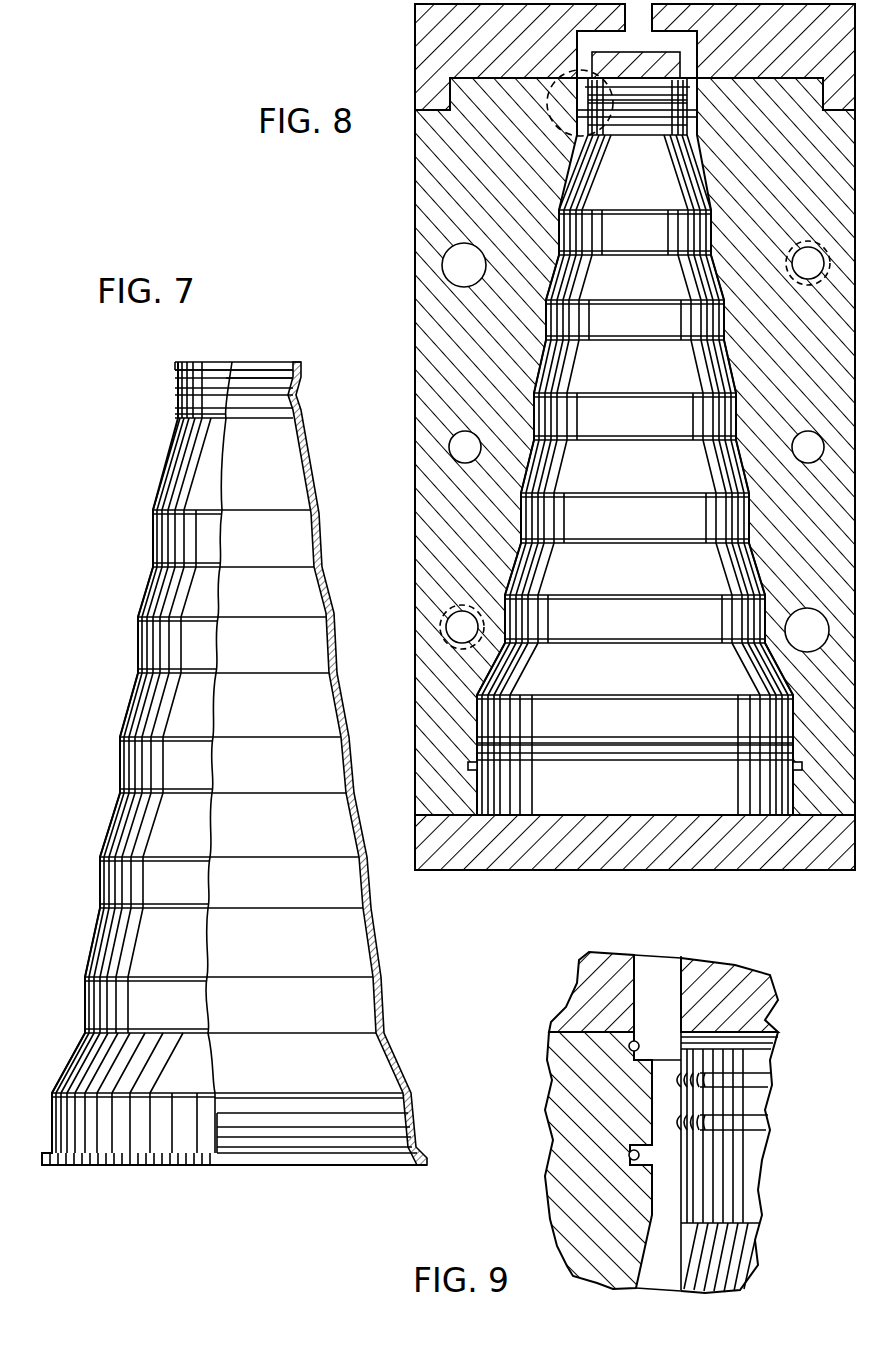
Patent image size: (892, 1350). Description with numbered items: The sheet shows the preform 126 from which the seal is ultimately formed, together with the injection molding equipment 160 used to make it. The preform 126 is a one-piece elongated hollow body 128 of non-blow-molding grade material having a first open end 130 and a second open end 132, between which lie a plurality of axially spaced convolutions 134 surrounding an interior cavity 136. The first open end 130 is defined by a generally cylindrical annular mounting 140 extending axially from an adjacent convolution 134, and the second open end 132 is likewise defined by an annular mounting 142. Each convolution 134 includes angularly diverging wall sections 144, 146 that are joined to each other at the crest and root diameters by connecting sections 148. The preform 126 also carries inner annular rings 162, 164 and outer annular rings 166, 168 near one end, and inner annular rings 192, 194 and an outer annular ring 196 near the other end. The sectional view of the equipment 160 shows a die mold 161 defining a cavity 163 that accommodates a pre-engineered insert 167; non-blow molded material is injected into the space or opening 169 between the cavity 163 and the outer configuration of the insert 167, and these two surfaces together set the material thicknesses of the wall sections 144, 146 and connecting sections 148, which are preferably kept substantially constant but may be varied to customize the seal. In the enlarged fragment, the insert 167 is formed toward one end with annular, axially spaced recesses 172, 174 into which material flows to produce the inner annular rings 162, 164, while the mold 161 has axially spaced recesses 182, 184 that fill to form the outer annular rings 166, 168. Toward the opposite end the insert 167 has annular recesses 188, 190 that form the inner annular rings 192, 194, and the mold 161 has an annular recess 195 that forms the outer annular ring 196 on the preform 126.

In FIG. 7, the preform 126 is at (106, 560).
In FIG. 7, the one-piece elongated hollow body 128 is at (211, 464).
In FIG. 7, the first open end 130 is at (417, 1120).
In FIG. 7, the second open end 132 is at (177, 385).
In FIG. 7, the convolutions 134 is at (135, 768).
In FIG. 7, the cavity 136 is at (308, 532).
In FIG. 7, the annular mounting 140 is at (63, 1127).
In FIG. 7, the annular mounting 142 is at (270, 360).
In FIG. 7, the angularly diverging wall section 144 is at (333, 577).
In FIG. 7, the angularly diverging wall section 146 is at (337, 657).
In FIG. 7, the connecting sections 148 is at (316, 500).
In FIG. 8, the injection molding equipment 160 is at (402, 58).
In FIG. 9, the injection molding equipment 160 is at (554, 997).
In FIG. 8, the die mold 161 is at (412, 212).
In FIG. 9, the die mold 161 is at (545, 1105).
In FIG. 7, the inner annular ring 162 is at (297, 375).
In FIG. 8, the cavity 163 is at (558, 218).
In FIG. 7, the inner annular ring 164 is at (300, 391).
In FIG. 7, the outer annular ring 166 is at (173, 363).
In FIG. 8, the insert 167 is at (641, 429).
In FIG. 9, the insert 167 is at (745, 1255).
In FIG. 7, the outer annular ring 168 is at (177, 403).
In FIG. 8, the space or opening 169 is at (537, 363).
In FIG. 9, the annular recess 172 is at (756, 1090).
In FIG. 9, the annular recess 174 is at (766, 1133).
In FIG. 9, the annular recess 182 is at (630, 1043).
In FIG. 9, the annular recess 184 is at (630, 1153).
In FIG. 8, the annular recess 188 is at (643, 750).
In FIG. 8, the annular recess 190 is at (570, 737).
In FIG. 7, the inner annular ring 192 is at (285, 1140).
In FIG. 7, the inner annular ring 194 is at (243, 1120).
In FIG. 8, the annular recess 195 is at (468, 770).
In FIG. 7, the outer annular ring 196 is at (433, 1175).